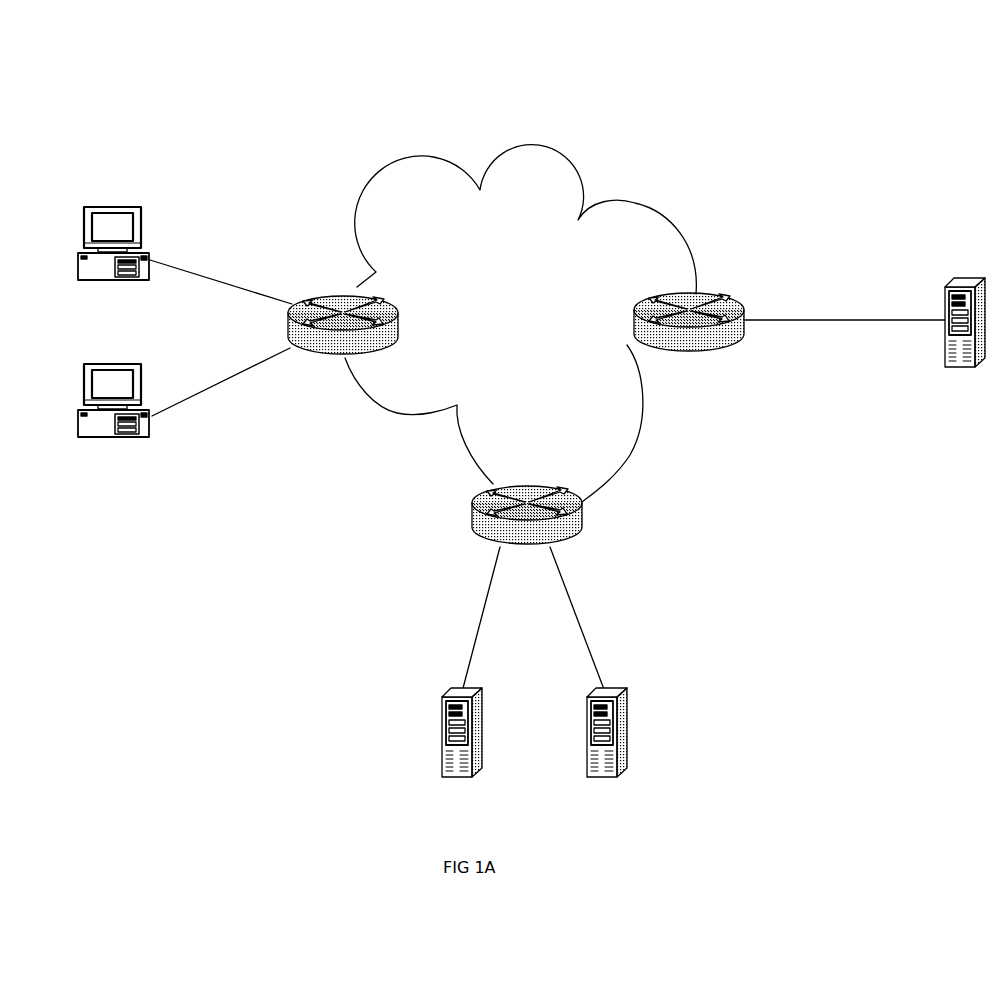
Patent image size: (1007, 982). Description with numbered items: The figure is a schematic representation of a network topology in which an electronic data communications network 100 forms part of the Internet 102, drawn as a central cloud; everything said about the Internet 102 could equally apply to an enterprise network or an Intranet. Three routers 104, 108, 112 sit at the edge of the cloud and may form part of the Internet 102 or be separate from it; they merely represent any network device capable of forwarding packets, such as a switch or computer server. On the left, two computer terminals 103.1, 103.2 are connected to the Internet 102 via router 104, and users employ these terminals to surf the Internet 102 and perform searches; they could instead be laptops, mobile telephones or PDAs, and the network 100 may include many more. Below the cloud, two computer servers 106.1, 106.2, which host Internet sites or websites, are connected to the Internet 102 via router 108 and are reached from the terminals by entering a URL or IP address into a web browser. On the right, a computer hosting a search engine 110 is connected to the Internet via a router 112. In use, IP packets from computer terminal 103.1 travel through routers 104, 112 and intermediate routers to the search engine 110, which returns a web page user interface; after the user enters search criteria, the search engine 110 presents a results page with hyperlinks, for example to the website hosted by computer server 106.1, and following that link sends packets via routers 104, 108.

The electronic data communications network 100 is at (219, 127).
The Internet 102 is at (383, 177).
The computer terminal 103.1 is at (142, 241).
The computer terminal 103.2 is at (115, 362).
The router 104 is at (318, 360).
The computer server 106.1 is at (443, 730).
The computer server 106.2 is at (625, 727).
The router 108 is at (472, 510).
The search engine 110 is at (943, 297).
The router 112 is at (732, 352).